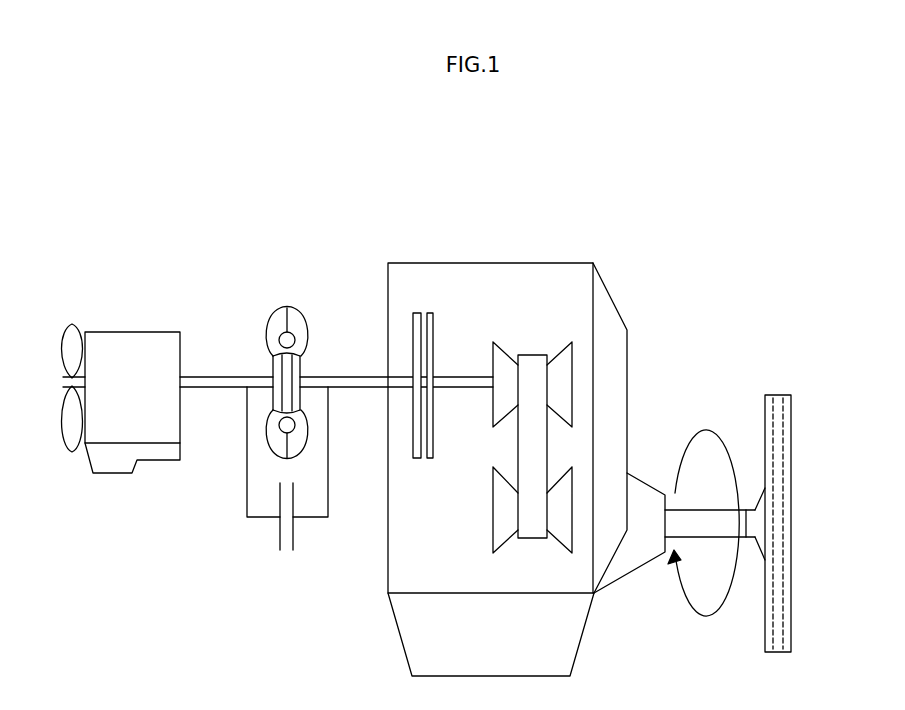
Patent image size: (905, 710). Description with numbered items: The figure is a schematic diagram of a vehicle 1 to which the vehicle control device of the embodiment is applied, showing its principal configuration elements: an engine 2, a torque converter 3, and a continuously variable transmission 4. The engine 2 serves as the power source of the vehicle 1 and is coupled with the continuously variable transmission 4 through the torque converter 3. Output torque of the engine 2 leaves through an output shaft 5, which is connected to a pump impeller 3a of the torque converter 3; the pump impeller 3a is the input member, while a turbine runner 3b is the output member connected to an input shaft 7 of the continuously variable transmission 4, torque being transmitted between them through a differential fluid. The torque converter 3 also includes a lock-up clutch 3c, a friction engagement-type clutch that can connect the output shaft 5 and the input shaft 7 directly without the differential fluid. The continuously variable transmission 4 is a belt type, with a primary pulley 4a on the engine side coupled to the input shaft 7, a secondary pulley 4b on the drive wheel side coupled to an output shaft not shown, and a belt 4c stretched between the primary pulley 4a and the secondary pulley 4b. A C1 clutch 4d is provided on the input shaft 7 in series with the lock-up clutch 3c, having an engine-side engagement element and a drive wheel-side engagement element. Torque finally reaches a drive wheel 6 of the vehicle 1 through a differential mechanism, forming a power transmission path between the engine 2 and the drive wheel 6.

The vehicle 1 is at (550, 193).
The engine 2 is at (140, 332).
The torque converter 3 is at (282, 302).
The pump impeller 3a is at (272, 312).
The turbine runner 3b is at (302, 312).
The lock-up clutch 3c is at (279, 533).
The continuously variable transmission 4 is at (528, 263).
The primary pulley 4a is at (573, 368).
The secondary pulley 4b is at (493, 518).
The belt 4c is at (547, 450).
The C1 clutch 4d is at (416, 301).
The output shaft 5 is at (215, 377).
The drive wheel 6 is at (792, 627).
The input shaft 7 is at (355, 377).